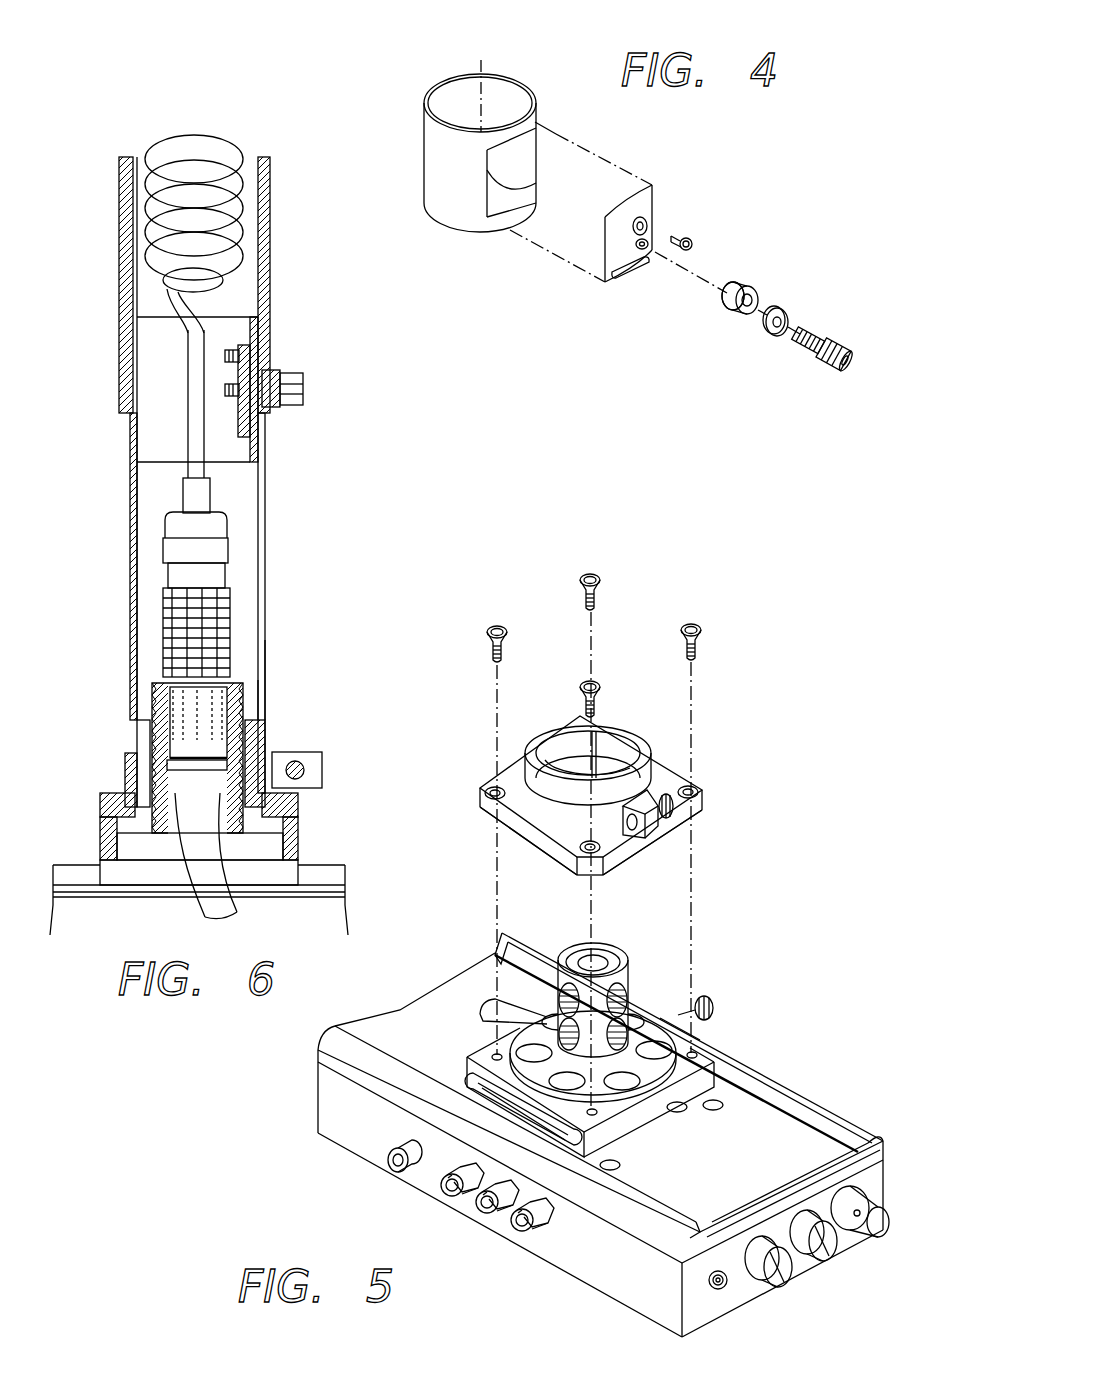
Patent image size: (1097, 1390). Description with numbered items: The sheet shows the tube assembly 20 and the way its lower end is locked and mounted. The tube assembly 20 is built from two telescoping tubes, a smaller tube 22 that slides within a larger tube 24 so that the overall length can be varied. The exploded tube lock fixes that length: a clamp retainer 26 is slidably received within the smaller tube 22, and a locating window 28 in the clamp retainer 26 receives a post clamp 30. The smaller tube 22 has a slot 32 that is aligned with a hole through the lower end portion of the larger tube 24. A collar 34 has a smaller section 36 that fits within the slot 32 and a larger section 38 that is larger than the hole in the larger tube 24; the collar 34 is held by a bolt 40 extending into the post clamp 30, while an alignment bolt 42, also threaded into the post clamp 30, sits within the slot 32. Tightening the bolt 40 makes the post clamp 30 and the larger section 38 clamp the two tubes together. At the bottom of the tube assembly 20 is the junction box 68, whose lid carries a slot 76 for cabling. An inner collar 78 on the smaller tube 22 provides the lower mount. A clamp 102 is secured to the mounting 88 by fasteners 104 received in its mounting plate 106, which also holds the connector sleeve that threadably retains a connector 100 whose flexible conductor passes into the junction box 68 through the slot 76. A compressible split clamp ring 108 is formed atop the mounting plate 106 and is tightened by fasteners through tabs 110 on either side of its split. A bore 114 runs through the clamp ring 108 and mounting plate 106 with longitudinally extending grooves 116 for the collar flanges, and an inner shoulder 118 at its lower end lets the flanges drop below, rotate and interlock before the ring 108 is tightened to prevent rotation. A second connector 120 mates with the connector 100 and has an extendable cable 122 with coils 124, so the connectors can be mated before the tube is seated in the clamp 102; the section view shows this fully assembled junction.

In FIG. 6, the tube assembly 20 is at (296, 198).
In FIG. 6, the smaller tube 22 is at (268, 703).
In FIG. 6, the larger tube 24 is at (270, 264).
In FIG. 4, the clamp retainer 26 is at (517, 75).
In FIG. 4, the locating window 28 is at (553, 140).
In FIG. 4, the post clamp 30 is at (630, 207).
In FIG. 6, the slot 32 is at (266, 540).
In FIG. 4, the collar 34 is at (746, 284).
In FIG. 4, the smaller section 36 is at (722, 296).
In FIG. 4, the larger section 38 is at (722, 310).
In FIG. 4, the bolt 40 is at (838, 338).
In FIG. 4, the alignment bolt 42 is at (690, 238).
In FIG. 5, the junction box 68 is at (619, 1283).
In FIG. 5, the slot 76 is at (497, 1017).
In FIG. 6, the inner collar 78 is at (258, 692).
In FIG. 5, the mounting 88 is at (707, 1048).
In FIG. 6, the connector 100 is at (197, 760).
In FIG. 5, the clamp 102 is at (673, 764).
In FIG. 5, the fasteners 104 is at (693, 628).
In FIG. 6, the mounting plate 106 is at (298, 810).
In FIG. 5, the mounting plate 106 is at (703, 810).
In FIG. 6, the compressible split clamp ring 108 is at (125, 775).
In FIG. 5, the compressible split clamp ring 108 is at (540, 743).
In FIG. 6, the tabs 110 is at (320, 775).
In FIG. 5, the tabs 110 is at (657, 823).
In FIG. 5, the bore 114 is at (550, 752).
In FIG. 5, the longitudinally extending grooves 116 is at (623, 747).
In FIG. 6, the inner shoulder 118 is at (117, 808).
In FIG. 6, the second connector 120 is at (231, 617).
In FIG. 6, the extendable cable 122 is at (188, 383).
In FIG. 6, the coils 124 is at (196, 148).